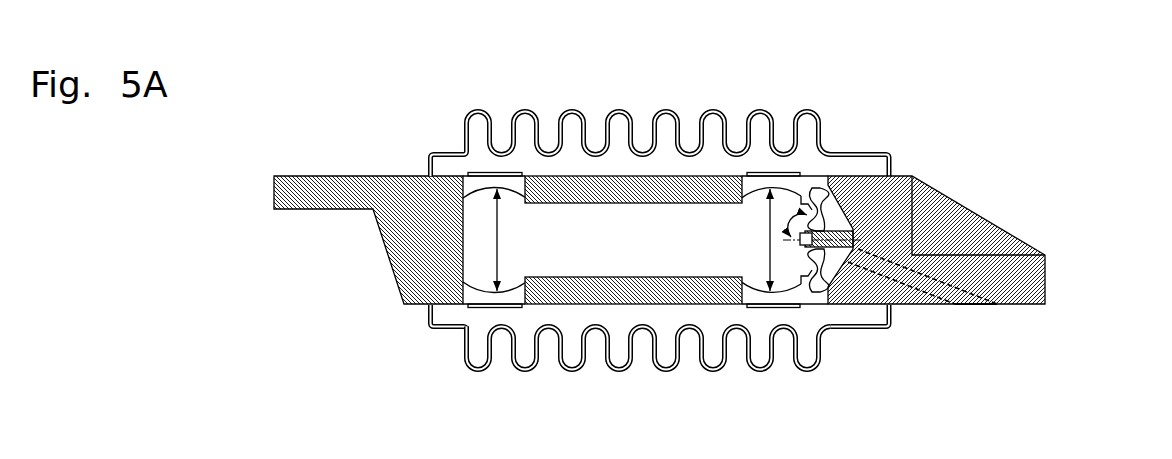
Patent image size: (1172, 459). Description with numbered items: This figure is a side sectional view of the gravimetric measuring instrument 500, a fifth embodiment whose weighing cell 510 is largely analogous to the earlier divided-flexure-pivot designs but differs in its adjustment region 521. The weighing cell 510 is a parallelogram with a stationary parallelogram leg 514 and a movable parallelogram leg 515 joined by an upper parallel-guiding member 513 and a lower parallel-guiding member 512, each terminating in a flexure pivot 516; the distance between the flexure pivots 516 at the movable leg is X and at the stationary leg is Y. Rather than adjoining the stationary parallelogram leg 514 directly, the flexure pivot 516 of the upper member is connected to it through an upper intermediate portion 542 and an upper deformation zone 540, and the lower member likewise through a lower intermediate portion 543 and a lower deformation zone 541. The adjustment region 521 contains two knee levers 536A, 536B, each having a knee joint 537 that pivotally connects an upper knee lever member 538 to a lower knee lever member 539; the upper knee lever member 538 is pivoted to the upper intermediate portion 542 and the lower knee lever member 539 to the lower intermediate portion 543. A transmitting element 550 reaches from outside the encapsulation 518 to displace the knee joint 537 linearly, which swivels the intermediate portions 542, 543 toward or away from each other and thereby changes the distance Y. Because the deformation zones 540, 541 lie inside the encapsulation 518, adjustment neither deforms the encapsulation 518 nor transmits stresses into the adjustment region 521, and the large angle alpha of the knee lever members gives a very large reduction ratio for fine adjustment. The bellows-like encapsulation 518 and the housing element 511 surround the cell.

The gravimetric measuring instrument 500 is at (393, 105).
The weighing cell 510 is at (537, 374).
The bellows housing 511 is at (621, 327).
The lower parallel-guiding member 512 is at (678, 290).
The upper parallel-guiding member 513 is at (622, 190).
The stationary parallelogram leg 514 is at (988, 245).
The movable parallelogram leg 515 is at (417, 235).
The flexure pivot 516 is at (752, 183).
The encapsulation 518 is at (524, 110).
The adjustment region 521 is at (870, 197).
The knee joint 537 is at (853, 229).
The upper knee lever member 538 is at (812, 226).
The lower knee lever member 539 is at (822, 266).
The upper deformation zone 540 is at (822, 228).
The lower deformation zone 541 is at (819, 268).
The upper intermediate portion 542 is at (808, 190).
The lower intermediate portion 543 is at (808, 280).
The transmitting element 550 is at (983, 305).
The knee lever 536A is at (838, 258).
The knee lever 536B is at (1027, 366).